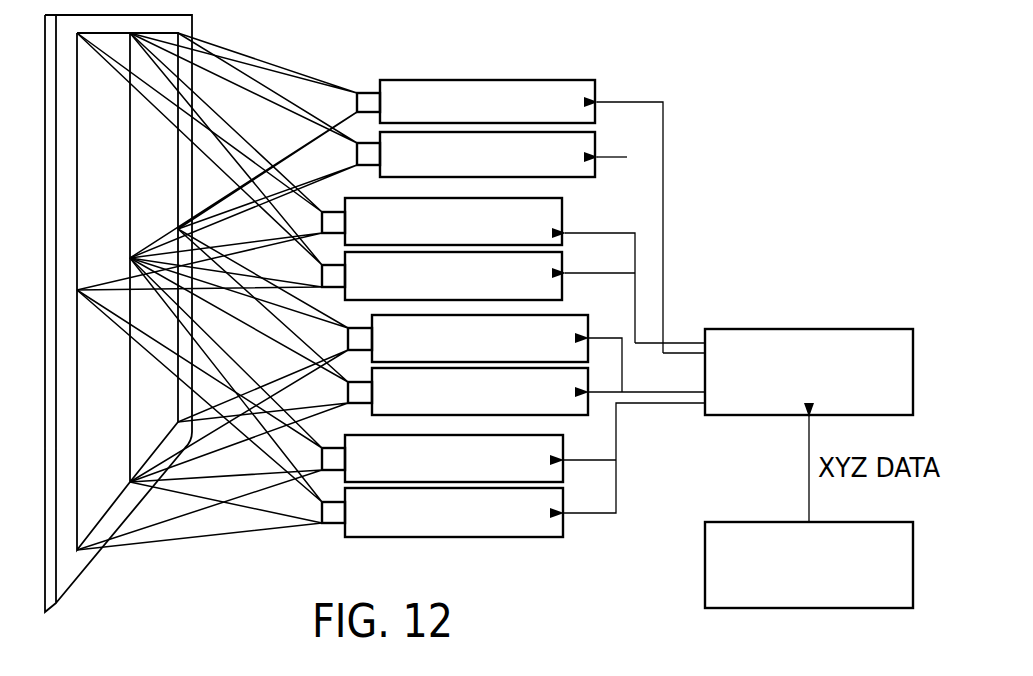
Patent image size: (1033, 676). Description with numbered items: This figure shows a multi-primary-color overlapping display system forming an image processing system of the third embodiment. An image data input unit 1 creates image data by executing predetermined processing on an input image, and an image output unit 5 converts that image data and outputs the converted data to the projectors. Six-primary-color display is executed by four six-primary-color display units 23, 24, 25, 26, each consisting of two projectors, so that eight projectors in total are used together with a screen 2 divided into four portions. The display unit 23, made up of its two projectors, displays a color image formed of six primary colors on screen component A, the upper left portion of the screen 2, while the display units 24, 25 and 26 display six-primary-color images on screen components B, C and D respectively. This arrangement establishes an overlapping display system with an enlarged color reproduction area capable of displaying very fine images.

The image data input unit 1 is at (705, 556).
The screen 2 is at (193, 20).
The image output unit 5 is at (810, 328).
The six-primary-color display unit 23 is at (620, 258).
The six-primary-color display unit 24 is at (617, 131).
The six-primary-color display unit 25 is at (588, 492).
The six-primary-color display unit 26 is at (607, 368).